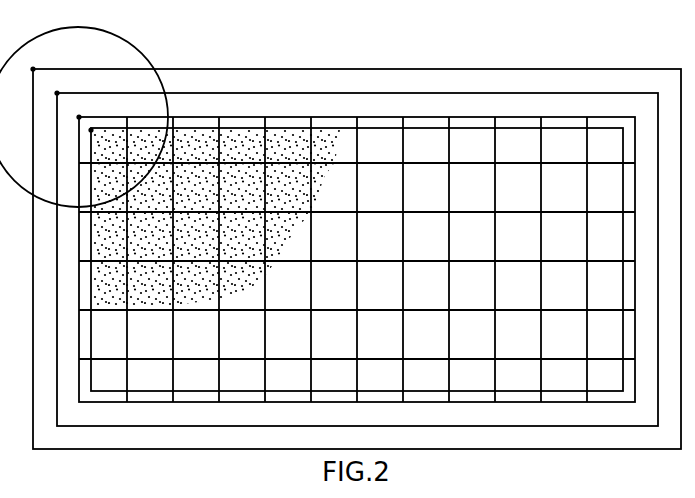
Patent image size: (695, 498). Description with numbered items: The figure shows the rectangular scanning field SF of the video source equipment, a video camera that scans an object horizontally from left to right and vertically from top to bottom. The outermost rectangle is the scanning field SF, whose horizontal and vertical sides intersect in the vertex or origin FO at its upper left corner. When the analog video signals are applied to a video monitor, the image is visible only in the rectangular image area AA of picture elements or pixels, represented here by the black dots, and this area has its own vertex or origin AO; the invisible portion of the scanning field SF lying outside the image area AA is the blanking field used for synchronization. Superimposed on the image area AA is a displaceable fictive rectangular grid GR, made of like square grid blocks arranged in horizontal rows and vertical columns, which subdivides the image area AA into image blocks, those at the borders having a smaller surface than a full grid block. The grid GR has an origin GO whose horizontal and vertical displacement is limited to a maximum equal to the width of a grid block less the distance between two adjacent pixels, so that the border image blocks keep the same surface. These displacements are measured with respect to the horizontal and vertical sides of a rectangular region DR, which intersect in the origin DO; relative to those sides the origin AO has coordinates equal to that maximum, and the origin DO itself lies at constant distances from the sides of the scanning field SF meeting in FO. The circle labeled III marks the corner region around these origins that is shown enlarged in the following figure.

The detail region of FIG. 3 III is at (133, 45).
The scanning field origin FO is at (41, 58).
The region origin DO is at (67, 82).
The grid origin GO is at (89, 107).
The image area origin AO is at (103, 141).
The image area AA is at (229, 128).
The grid GR is at (302, 117).
The rectangular region DR is at (412, 92).
The scanning field SF is at (492, 68).